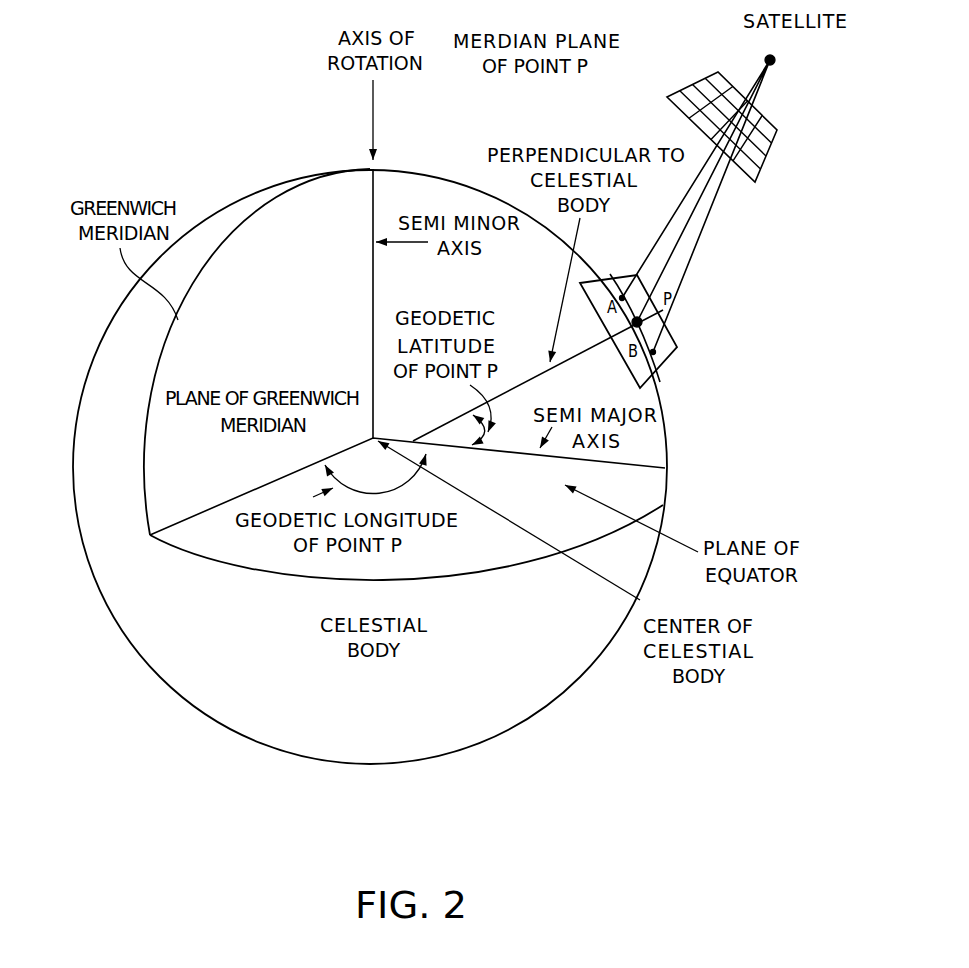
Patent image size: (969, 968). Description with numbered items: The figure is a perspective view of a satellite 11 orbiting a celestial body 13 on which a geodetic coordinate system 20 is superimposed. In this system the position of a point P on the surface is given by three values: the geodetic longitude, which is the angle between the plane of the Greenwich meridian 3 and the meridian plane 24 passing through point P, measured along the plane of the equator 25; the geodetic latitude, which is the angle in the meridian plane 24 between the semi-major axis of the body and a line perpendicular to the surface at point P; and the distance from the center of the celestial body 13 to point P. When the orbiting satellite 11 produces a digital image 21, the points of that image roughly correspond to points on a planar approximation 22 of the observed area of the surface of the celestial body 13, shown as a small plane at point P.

The Greenwich meridian 3 is at (200, 368).
The satellite 11 is at (775, 60).
The celestial body 13 is at (472, 723).
The geodetic coordinate system 20 is at (638, 764).
The digital image 21 is at (777, 152).
The planar approximation 22 is at (672, 360).
The meridian plane 24 is at (447, 187).
The plane of the equator 25 is at (655, 497).